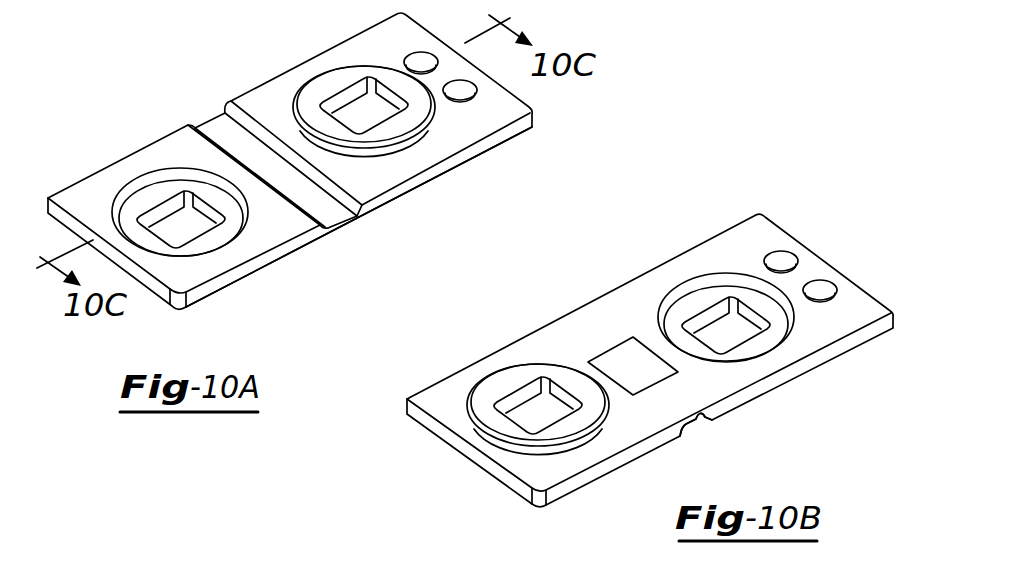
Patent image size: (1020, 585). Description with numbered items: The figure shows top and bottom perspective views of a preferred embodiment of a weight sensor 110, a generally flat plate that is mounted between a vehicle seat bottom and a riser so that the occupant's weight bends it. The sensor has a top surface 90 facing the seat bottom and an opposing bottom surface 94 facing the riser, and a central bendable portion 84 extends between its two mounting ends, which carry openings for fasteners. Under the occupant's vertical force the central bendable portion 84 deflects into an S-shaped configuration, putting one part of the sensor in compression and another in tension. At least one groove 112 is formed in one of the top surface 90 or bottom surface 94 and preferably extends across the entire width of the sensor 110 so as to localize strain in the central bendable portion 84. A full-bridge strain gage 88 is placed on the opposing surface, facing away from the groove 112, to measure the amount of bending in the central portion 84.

In FIG. 10A, the weight sensor 110 is at (195, 64).
In FIG. 10B, the weight sensor 110 is at (676, 208).
In FIG. 10A, the central bendable portion 84 is at (367, 183).
In FIG. 10B, the central bendable portion 84 is at (627, 305).
In FIG. 10A, the top surface 90 is at (93, 203).
In FIG. 10A, the bottom surface 94 is at (237, 290).
In FIG. 10A, the groove 112 is at (328, 215).
In FIG. 10B, the groove 112 is at (695, 420).
In FIG. 10B, the strain gage 88 is at (612, 357).